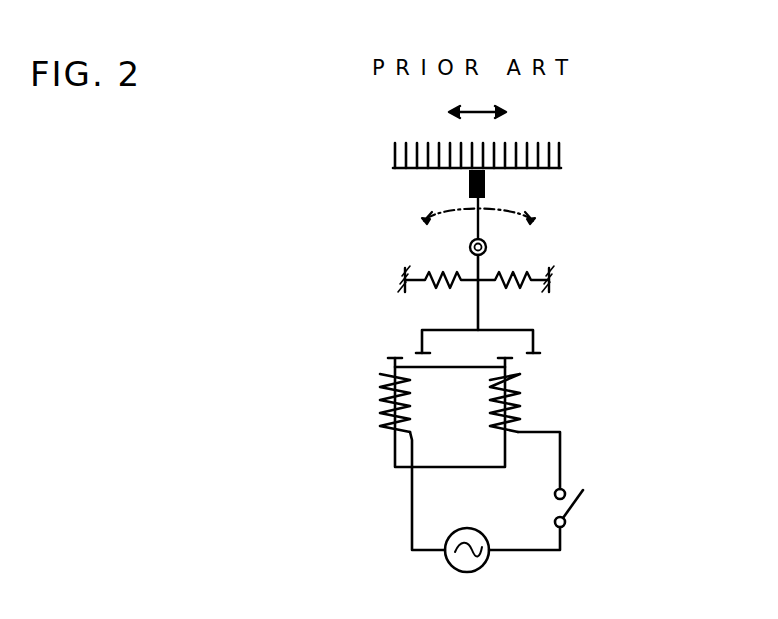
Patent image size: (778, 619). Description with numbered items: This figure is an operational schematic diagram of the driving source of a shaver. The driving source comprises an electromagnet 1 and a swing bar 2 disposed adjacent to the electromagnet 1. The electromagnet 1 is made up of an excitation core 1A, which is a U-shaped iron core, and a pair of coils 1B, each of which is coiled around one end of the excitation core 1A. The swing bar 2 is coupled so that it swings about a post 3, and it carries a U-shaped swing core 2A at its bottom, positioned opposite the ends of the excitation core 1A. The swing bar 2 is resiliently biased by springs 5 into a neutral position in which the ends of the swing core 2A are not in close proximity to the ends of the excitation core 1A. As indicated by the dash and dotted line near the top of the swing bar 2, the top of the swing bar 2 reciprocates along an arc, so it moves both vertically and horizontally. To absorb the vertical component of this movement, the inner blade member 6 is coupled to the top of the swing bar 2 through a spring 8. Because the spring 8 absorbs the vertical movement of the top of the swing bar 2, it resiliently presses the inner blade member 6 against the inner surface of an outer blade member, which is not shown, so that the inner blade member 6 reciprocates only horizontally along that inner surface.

The electromagnet 1 is at (372, 406).
The excitation core 1A is at (428, 470).
The coils 1B is at (385, 390).
The swing bar 2 is at (480, 305).
The swing core 2A is at (536, 340).
The post 3 is at (488, 247).
The springs 5 is at (522, 280).
The inner blade member 6 is at (516, 145).
The spring 8 is at (468, 181).